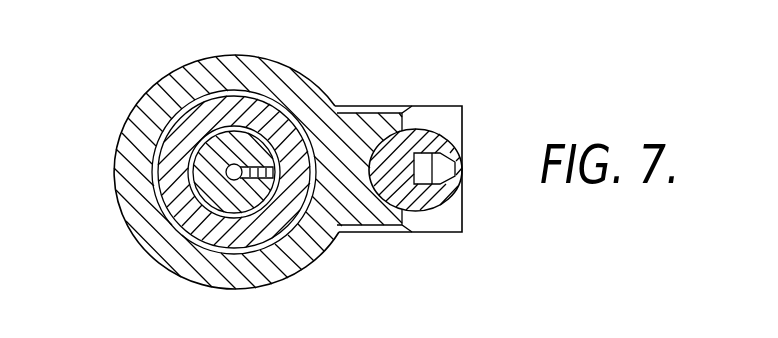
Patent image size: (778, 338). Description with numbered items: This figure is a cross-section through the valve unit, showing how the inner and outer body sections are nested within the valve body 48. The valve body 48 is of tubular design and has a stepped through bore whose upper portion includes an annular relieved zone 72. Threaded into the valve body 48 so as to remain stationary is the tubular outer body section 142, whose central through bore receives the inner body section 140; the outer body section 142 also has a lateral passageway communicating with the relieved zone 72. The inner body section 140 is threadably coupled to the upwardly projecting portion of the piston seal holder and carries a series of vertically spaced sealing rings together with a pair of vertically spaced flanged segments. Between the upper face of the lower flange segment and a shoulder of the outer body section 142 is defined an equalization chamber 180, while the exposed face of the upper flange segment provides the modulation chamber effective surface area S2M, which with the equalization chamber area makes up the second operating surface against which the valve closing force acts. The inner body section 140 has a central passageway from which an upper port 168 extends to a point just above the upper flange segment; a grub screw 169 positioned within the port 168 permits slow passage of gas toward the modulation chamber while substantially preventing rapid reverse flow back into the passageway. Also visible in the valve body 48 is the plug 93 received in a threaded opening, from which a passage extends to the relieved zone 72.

The valve body 48 is at (157, 87).
The relieved zone 72 is at (272, 92).
The grub screw 169 is at (302, 122).
The outer body section 142 is at (163, 172).
The modulation chamber effective surface area S2M is at (197, 155).
The equalization chamber 180 is at (206, 143).
The inner body section 140 is at (215, 192).
The upper port 168 is at (317, 255).
The plug 93 is at (442, 148).